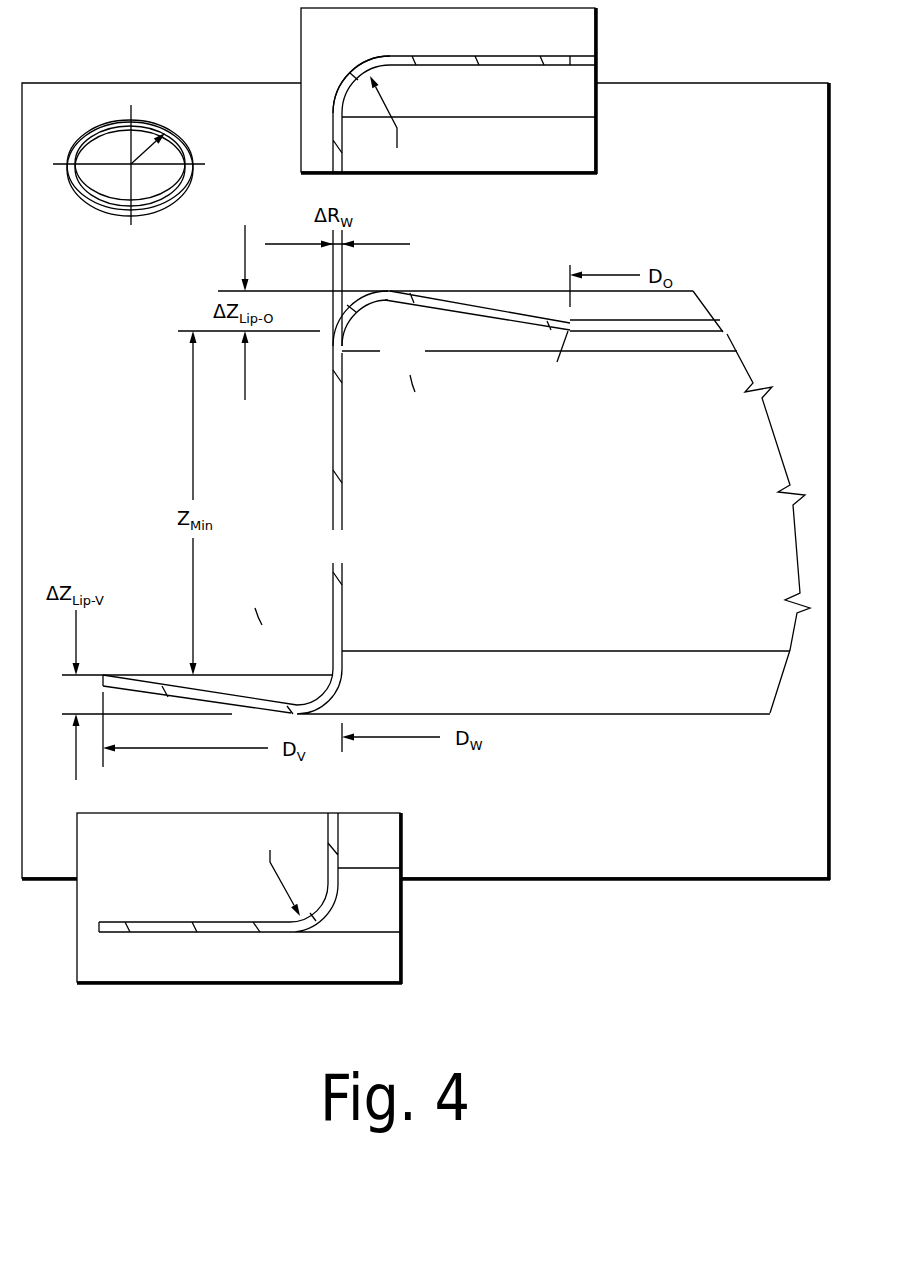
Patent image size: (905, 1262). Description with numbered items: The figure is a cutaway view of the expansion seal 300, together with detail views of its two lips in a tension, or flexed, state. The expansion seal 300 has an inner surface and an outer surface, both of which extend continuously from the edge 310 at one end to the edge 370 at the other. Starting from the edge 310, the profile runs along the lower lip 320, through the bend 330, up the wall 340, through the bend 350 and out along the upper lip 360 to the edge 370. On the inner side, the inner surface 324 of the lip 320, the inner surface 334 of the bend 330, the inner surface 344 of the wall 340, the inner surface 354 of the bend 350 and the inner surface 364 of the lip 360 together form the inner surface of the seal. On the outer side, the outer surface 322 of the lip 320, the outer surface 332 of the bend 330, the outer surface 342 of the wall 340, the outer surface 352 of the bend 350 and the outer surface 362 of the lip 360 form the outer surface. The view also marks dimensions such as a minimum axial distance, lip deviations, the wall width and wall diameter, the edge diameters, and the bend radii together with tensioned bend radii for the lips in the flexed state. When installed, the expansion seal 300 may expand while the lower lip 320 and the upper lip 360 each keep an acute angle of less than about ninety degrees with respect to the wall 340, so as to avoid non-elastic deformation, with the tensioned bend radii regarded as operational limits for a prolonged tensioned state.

The expansion seal 300 is at (86, 125).
The edge 310 is at (105, 676).
The lip 320 is at (221, 709).
The outer surface of the lip 322 is at (210, 920).
The inner surface of the lip 324 is at (212, 933).
The bend 330 is at (435, 776).
The outer surface of the bend 332 is at (296, 915).
The inner surface of the bend 334 is at (533, 793).
The wall 340 is at (467, 480).
The outer surface of the wall 342 is at (333, 497).
The inner surface of the wall 344 is at (342, 497).
The bend 350 is at (370, 321).
The outer surface of the bend 352 is at (378, 63).
The inner surface of the bend 354 is at (376, 74).
The lip 360 is at (554, 183).
The outer surface of the lip 362 is at (495, 44).
The inner surface of the lip 364 is at (527, 70).
The edge 370 is at (557, 362).